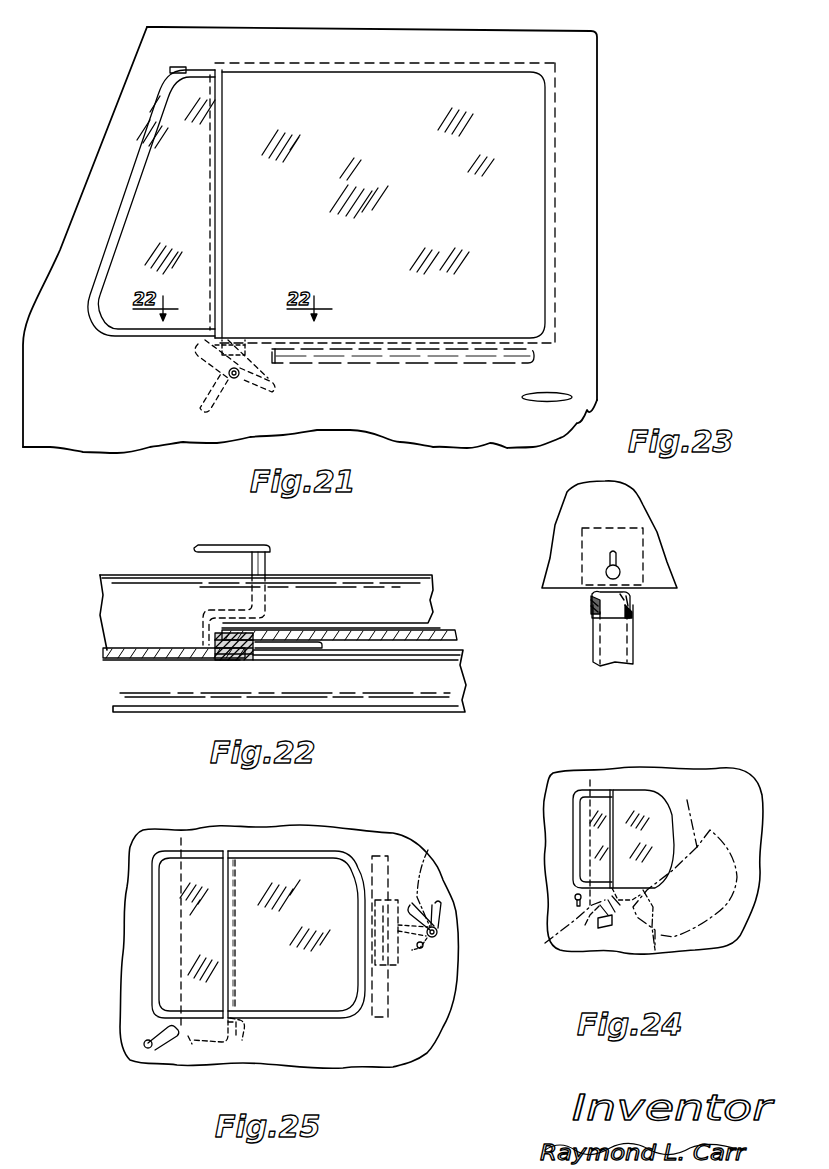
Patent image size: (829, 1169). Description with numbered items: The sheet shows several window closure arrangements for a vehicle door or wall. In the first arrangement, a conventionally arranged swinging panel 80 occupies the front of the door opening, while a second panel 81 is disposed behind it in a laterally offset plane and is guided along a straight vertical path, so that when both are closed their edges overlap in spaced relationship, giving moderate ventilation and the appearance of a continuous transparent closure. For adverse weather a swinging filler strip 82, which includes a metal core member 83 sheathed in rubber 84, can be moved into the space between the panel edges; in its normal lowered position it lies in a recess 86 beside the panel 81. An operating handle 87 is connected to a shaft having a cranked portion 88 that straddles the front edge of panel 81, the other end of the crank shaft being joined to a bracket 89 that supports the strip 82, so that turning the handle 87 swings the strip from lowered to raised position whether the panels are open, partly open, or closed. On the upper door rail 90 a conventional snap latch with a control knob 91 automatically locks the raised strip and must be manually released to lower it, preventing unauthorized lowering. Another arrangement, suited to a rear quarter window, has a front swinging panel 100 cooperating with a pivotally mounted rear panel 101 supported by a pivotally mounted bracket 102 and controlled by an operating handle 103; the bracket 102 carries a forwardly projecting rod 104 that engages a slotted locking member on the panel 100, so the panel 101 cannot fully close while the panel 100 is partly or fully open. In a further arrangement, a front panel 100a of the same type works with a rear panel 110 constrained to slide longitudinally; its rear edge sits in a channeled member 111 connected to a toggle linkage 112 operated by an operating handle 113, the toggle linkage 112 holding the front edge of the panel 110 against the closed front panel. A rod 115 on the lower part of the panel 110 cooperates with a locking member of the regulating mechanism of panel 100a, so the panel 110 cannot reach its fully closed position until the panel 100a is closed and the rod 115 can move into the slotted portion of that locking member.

In FIG. 21, the swinging panel 80 is at (145, 168).
In FIG. 22, the swinging panel 80 is at (125, 660).
In FIG. 21, the second panel 81 is at (535, 193).
In FIG. 22, the second panel 81 is at (442, 632).
In FIG. 21, the swinging filler strip 82 is at (222, 200).
In FIG. 22, the swinging filler strip 82 is at (246, 660).
In FIG. 23, the swinging filler strip 82 is at (644, 647).
In FIG. 23, the metal core member 83 is at (628, 599).
In FIG. 23, the rubber 84 is at (596, 608).
In FIG. 22, the recess 86 is at (462, 652).
In FIG. 22, the operating handle 87 is at (210, 545).
In FIG. 21, the cranked portion 88 is at (215, 398).
In FIG. 22, the cranked portion 88 is at (203, 625).
In FIG. 21, the bracket 89 is at (270, 385).
In FIG. 22, the bracket 89 is at (290, 645).
In FIG. 21, the upper door rail 90 is at (301, 37).
In FIG. 23, the upper door rail 90 is at (655, 530).
In FIG. 23, the control knob 91 is at (622, 568).
In FIG. 24, the front swinging panel 100 is at (599, 800).
In FIG. 25, the front panel 100a is at (170, 862).
In FIG. 24, the rear panel 101 is at (660, 812).
In FIG. 24, the pivotally mounted bracket 102 is at (654, 945).
In FIG. 24, the operating handle 103 is at (590, 935).
In FIG. 24, the forwardly projecting rod 104 is at (556, 936).
In FIG. 25, the rear panel 110 is at (280, 862).
In FIG. 25, the channeled member 111 is at (383, 970).
In FIG. 25, the toggle linkage 112 is at (410, 952).
In FIG. 25, the operating handle 113 is at (426, 888).
In FIG. 25, the rod 115 is at (215, 1038).